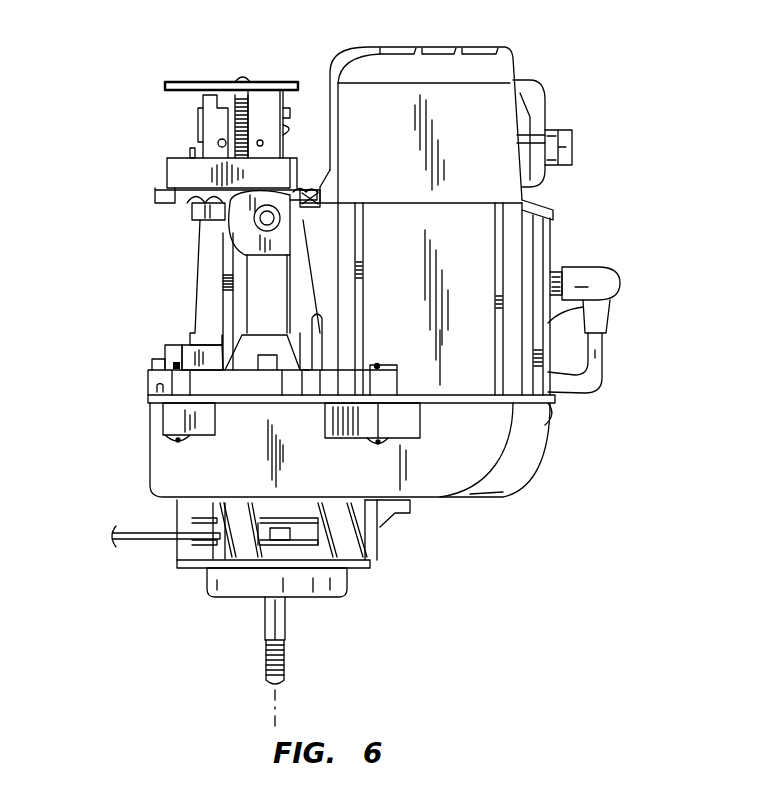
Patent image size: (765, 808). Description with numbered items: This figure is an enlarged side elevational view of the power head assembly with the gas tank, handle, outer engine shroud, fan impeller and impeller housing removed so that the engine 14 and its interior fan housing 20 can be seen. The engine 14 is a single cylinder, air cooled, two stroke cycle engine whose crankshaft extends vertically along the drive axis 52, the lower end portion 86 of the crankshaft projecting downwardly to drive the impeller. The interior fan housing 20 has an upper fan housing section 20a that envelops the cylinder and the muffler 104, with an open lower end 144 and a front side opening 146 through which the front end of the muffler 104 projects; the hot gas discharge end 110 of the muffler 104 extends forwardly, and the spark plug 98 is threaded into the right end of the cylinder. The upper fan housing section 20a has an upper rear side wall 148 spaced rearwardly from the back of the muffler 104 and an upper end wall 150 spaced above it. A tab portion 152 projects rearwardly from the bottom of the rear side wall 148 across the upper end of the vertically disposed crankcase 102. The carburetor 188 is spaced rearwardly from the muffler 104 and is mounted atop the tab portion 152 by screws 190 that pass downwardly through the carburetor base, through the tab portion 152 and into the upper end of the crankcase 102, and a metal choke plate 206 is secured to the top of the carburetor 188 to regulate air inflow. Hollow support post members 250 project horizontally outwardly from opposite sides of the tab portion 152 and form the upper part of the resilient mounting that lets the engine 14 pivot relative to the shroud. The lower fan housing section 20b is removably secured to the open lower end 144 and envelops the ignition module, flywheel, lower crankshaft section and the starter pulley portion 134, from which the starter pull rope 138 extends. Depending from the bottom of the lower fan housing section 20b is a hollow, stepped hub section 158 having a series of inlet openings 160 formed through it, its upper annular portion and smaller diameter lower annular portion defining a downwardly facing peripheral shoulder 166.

The engine 14 is at (560, 238).
The interior fan housing 20 is at (538, 459).
The upper fan housing section 20a is at (610, 307).
The lower fan housing section 20b is at (503, 497).
The drive axis 52 is at (280, 715).
The lower end portion of crankshaft 86 is at (285, 628).
The spark plug 98 is at (560, 262).
The crankcase 102 is at (197, 297).
The muffler 104 is at (545, 98).
The hot gas discharge end 110 is at (572, 148).
The starter pulley portion 134 is at (355, 512).
The starter pull rope 138 is at (130, 545).
The open lower end 144 is at (552, 413).
The front side opening 146 is at (510, 62).
The upper rear side wall 148 is at (327, 100).
The upper end wall 150 is at (430, 47).
The tab portion 152 is at (192, 212).
The hub section 158 is at (345, 582).
The inlet openings 160 is at (190, 508).
The peripheral shoulder 166 is at (195, 568).
The carburetor 188 is at (198, 125).
The screws 190 is at (320, 200).
The choke plate 206 is at (180, 82).
The support post members 250 is at (255, 225).